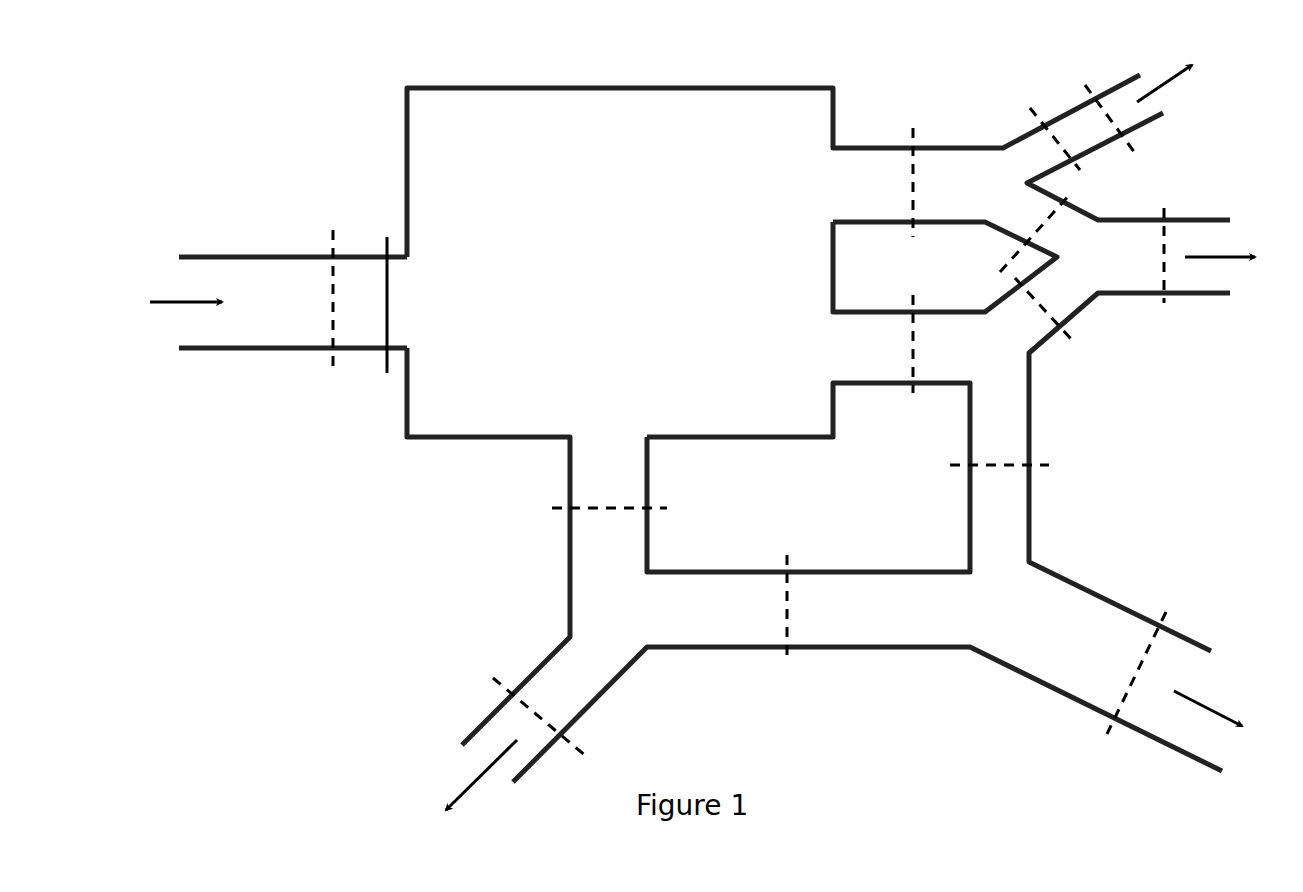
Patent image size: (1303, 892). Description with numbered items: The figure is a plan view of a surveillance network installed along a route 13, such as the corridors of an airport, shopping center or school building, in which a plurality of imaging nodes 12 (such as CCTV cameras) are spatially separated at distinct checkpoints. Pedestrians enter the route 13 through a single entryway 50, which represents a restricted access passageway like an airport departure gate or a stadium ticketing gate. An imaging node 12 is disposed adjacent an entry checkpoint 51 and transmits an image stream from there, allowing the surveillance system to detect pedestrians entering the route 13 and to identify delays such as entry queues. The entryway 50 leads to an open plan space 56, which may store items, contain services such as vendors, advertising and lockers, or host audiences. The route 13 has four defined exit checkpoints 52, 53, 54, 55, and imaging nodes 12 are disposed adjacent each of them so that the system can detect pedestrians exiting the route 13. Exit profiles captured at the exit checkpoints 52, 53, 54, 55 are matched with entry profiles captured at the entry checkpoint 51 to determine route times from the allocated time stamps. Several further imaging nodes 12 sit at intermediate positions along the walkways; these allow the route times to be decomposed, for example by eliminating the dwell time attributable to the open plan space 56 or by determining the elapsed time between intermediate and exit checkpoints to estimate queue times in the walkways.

The imaging node 12 is at (750, 421).
The route 13 is at (302, 686).
The entryway 50 is at (216, 348).
The entry checkpoint 51 is at (388, 315).
The exit checkpoint 52 is at (1127, 82).
The exit checkpoint 53 is at (1142, 217).
The exit checkpoint 54 is at (1122, 605).
The exit checkpoint 55 is at (533, 763).
The open plan space 56 is at (487, 152).